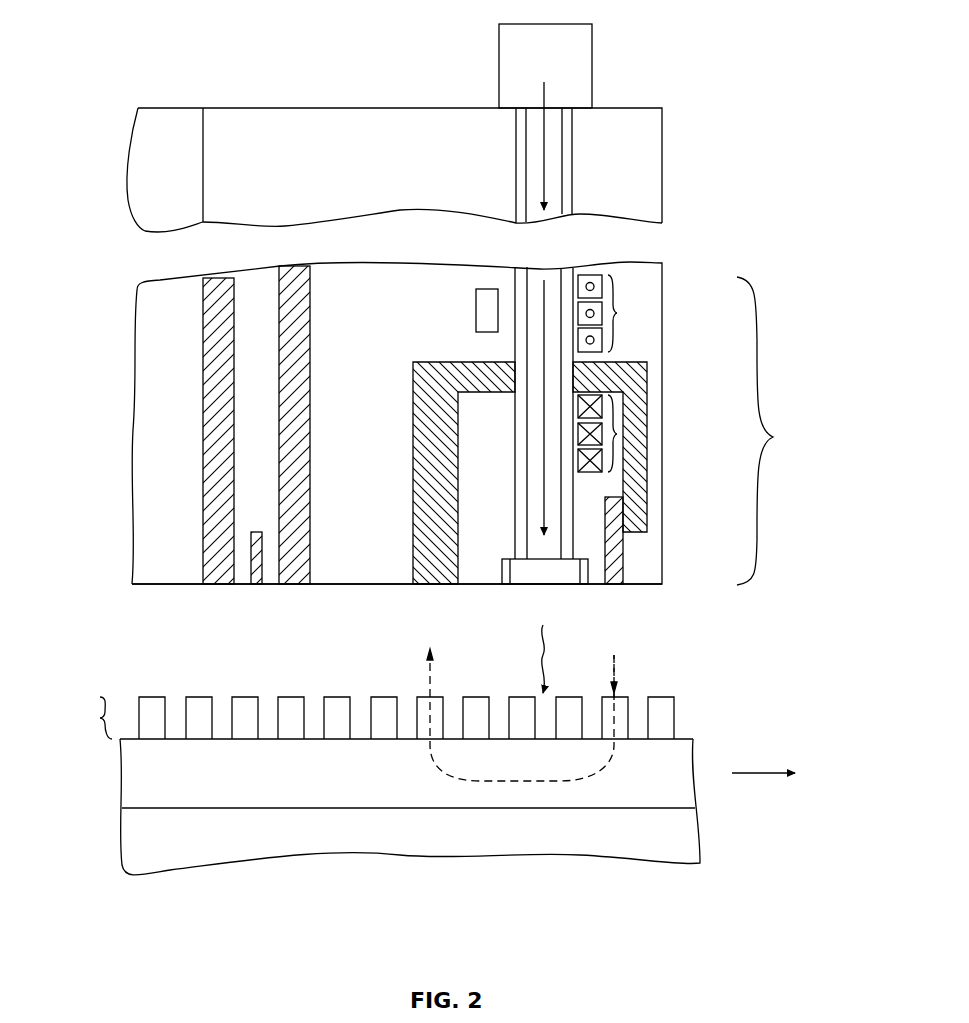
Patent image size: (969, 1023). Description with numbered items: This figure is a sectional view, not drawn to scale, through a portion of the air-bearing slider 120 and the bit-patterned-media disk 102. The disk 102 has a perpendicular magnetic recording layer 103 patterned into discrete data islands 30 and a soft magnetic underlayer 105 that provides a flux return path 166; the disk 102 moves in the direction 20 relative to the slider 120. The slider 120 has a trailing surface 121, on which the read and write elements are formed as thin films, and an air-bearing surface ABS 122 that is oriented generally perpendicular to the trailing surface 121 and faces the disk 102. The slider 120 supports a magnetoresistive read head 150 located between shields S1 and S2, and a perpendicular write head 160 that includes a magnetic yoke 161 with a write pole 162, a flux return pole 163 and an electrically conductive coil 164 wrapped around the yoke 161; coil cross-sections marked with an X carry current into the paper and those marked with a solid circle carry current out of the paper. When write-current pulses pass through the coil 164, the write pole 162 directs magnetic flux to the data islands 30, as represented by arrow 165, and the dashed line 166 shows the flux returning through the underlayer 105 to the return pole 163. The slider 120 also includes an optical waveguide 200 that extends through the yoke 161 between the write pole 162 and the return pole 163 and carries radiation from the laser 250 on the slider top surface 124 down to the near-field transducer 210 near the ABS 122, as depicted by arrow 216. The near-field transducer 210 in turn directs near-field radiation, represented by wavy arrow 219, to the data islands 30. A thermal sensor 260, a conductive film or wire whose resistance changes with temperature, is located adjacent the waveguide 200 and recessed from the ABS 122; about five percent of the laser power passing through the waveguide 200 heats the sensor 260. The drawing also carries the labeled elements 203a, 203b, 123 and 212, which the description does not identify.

The laser 250 is at (592, 66).
The slider top surface 124 is at (637, 108).
The trailing surface 121 is at (203, 180).
The air-bearing slider 120 is at (130, 272).
The optical waveguide 200 is at (527, 178).
The arrow 216 is at (544, 452).
The shield S1 is at (203, 327).
The shield S2 is at (310, 326).
The magnetoresistive read head 150 is at (251, 545).
The thermal sensor 260 is at (476, 311).
The magnetic yoke 161 is at (437, 362).
The flux return pole 163 is at (413, 402).
The first cladding 203a is at (520, 477).
The electrically conductive coil 164 is at (613, 437).
The overcoat 123 is at (662, 370).
The second cladding 203b is at (567, 498).
The perpendicular write head 160 is at (779, 431).
The write pole 162 is at (622, 545).
The near-field transducer 210 is at (541, 585).
The NFT layer 212 is at (585, 565).
The air-bearing surface ABS is at (155, 589).
The air-bearing surface 122 is at (178, 589).
The wavy arrow 219 is at (537, 650).
The flux return path 166 is at (512, 783).
The arrow 165 is at (615, 656).
The data islands 30 is at (628, 705).
The soft magnetic underlayer 105 is at (143, 782).
The perpendicular magnetic recording layer 103 is at (718, 848).
The BPM disk 102 is at (137, 888).
The direction 20 is at (765, 771).